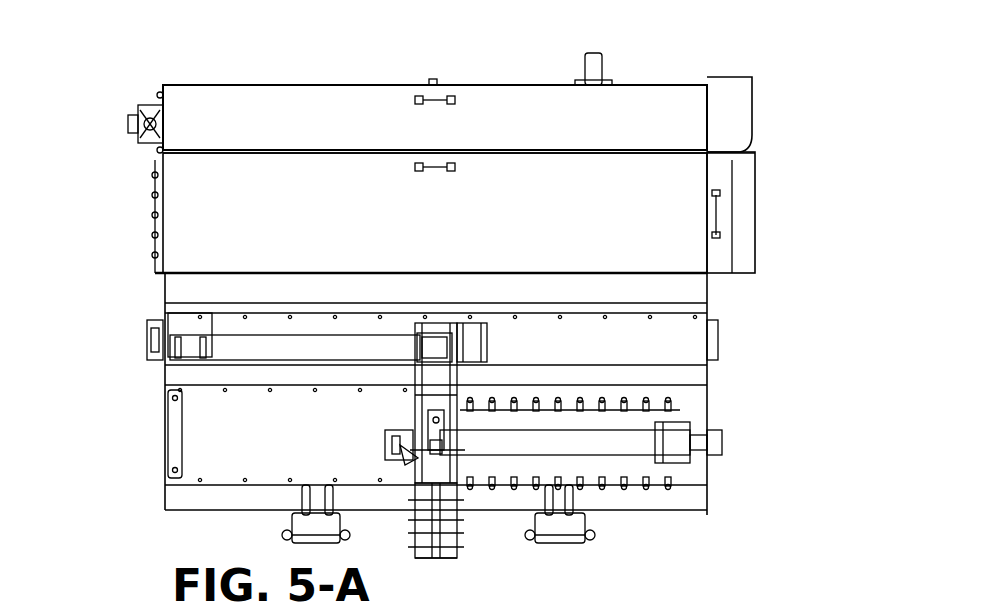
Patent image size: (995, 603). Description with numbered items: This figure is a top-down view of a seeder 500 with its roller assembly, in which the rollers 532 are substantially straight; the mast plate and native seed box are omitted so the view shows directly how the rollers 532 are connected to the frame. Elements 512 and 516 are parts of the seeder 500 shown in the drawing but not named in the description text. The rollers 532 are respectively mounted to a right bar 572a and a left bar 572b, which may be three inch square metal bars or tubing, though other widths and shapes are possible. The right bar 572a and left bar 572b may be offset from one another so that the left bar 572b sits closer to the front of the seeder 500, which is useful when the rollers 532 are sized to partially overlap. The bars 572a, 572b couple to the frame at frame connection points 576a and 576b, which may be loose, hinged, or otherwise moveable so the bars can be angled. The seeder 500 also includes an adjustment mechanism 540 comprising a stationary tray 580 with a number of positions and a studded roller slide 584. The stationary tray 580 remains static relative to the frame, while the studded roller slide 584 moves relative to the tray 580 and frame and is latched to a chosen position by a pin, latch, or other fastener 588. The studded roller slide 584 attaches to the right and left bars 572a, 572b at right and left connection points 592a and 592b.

The seeder 500 is at (204, 60).
The housing 512 is at (215, 200).
The end cap 516 is at (652, 117).
The rollers 532 is at (305, 323).
The adjustment mechanism 540 is at (450, 562).
The right bar 572a is at (270, 343).
The left bar 572b is at (600, 440).
The frame connection point 576a is at (160, 325).
The frame connection point 576b is at (707, 425).
The stationary tray 580 is at (440, 537).
The studded roller slide 584 is at (443, 398).
The fastener 588 is at (390, 452).
The right connection point 592a is at (432, 345).
The left connection point 592b is at (435, 440).